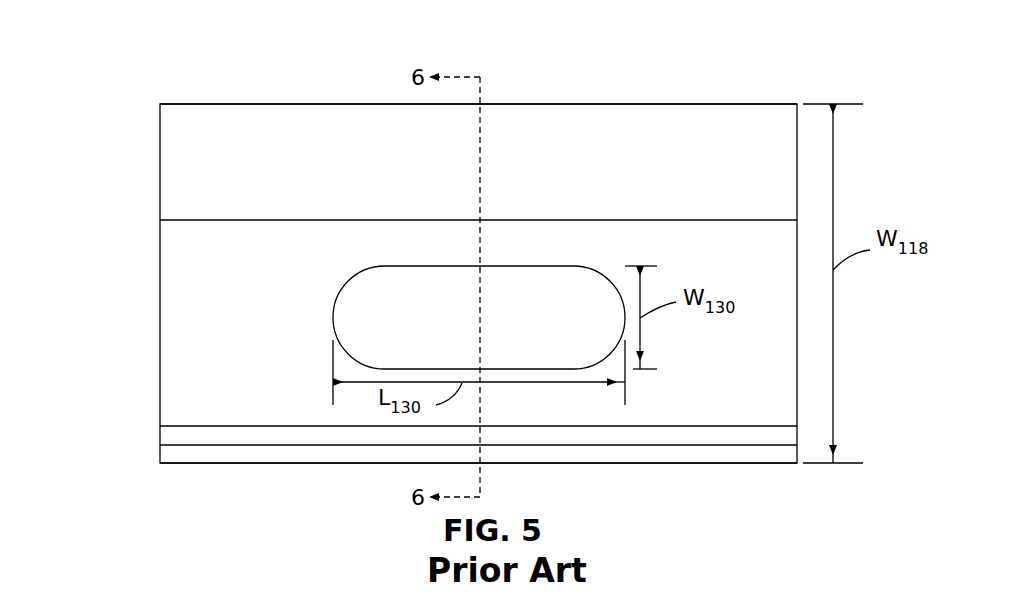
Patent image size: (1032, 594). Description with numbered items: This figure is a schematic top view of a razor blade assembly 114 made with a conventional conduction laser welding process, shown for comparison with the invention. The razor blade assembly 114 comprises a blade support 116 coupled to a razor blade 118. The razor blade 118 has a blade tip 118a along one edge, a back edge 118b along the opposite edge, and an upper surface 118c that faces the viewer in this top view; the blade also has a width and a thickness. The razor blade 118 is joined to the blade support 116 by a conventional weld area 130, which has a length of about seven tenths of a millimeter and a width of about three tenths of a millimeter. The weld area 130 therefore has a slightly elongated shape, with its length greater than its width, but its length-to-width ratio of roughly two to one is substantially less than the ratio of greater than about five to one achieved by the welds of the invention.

The razor blade assembly 114 is at (108, 148).
The blade support 116 is at (613, 463).
The razor blade 118 is at (146, 284).
The blade tip 118a is at (241, 104).
The back edge 118b is at (203, 445).
The upper surface 118c is at (478, 162).
The weld area 130 is at (557, 296).